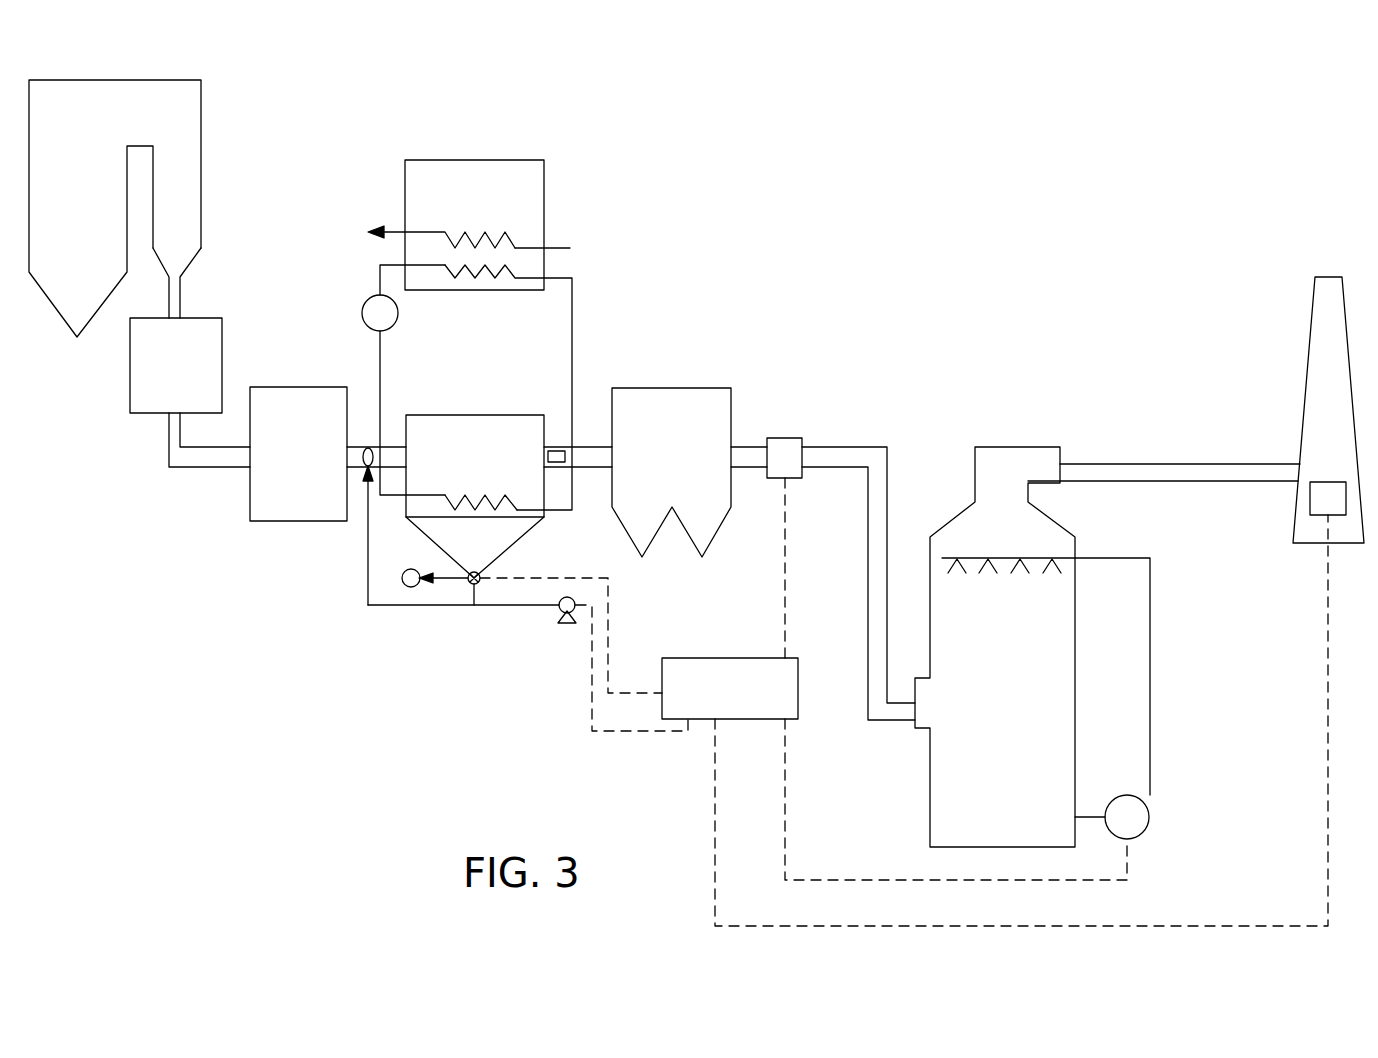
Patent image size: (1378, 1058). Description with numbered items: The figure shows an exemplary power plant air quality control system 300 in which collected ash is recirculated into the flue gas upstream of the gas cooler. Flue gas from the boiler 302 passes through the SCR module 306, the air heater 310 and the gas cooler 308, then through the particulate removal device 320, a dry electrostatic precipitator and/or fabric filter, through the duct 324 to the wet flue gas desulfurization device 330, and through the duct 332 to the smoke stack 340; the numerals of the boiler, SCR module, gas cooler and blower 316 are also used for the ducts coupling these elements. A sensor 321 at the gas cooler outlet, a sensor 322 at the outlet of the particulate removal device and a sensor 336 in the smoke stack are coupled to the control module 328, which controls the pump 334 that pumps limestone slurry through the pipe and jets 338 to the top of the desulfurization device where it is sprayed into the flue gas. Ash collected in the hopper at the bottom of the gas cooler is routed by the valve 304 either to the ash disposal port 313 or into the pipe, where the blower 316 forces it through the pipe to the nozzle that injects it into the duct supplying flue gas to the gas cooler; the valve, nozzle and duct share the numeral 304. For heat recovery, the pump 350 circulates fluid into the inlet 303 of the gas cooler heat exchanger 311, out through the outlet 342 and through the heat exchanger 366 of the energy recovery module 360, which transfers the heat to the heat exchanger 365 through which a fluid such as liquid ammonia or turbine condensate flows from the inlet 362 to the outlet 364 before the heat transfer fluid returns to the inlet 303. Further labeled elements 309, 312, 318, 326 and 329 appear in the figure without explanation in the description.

The system 300 is at (768, 192).
The boiler 302 is at (202, 183).
The inlet of the gas cooler heat exchanger 303 is at (380, 446).
The valve 304 is at (181, 298).
The SCR module 306 is at (222, 352).
The gas cooler 308 is at (181, 468).
The air heater 309 is at (310, 387).
The air heater 310 is at (555, 512).
The heat exchanger 311 is at (488, 510).
The condensate line 312 is at (446, 580).
The ash disposal port 313 is at (404, 585).
The blower 316 is at (596, 468).
The control signal line 318 is at (609, 586).
The particulate removal device 320 is at (670, 388).
The sensor 321 is at (560, 451).
The sensor 322 is at (784, 438).
The duct 324 is at (857, 447).
The control signal line 326 is at (786, 571).
The control module 328 is at (799, 697).
The WFGD inlet 329 is at (908, 729).
The wet flue gas desulfurization device 330 is at (1012, 447).
The duct 332 is at (1130, 464).
The pump 334 is at (1151, 622).
The sensor 336 is at (1310, 497).
The pipe and jets 338 is at (518, 607).
The smoke stack 340 is at (532, 527).
The outlet 342 is at (388, 497).
The pump 350 is at (364, 304).
The energy recovery module 360 is at (544, 162).
The inlet 362 is at (570, 250).
The outlet 364 is at (378, 228).
The heat exchanger 365 is at (515, 237).
The heat exchanger 366 is at (463, 280).